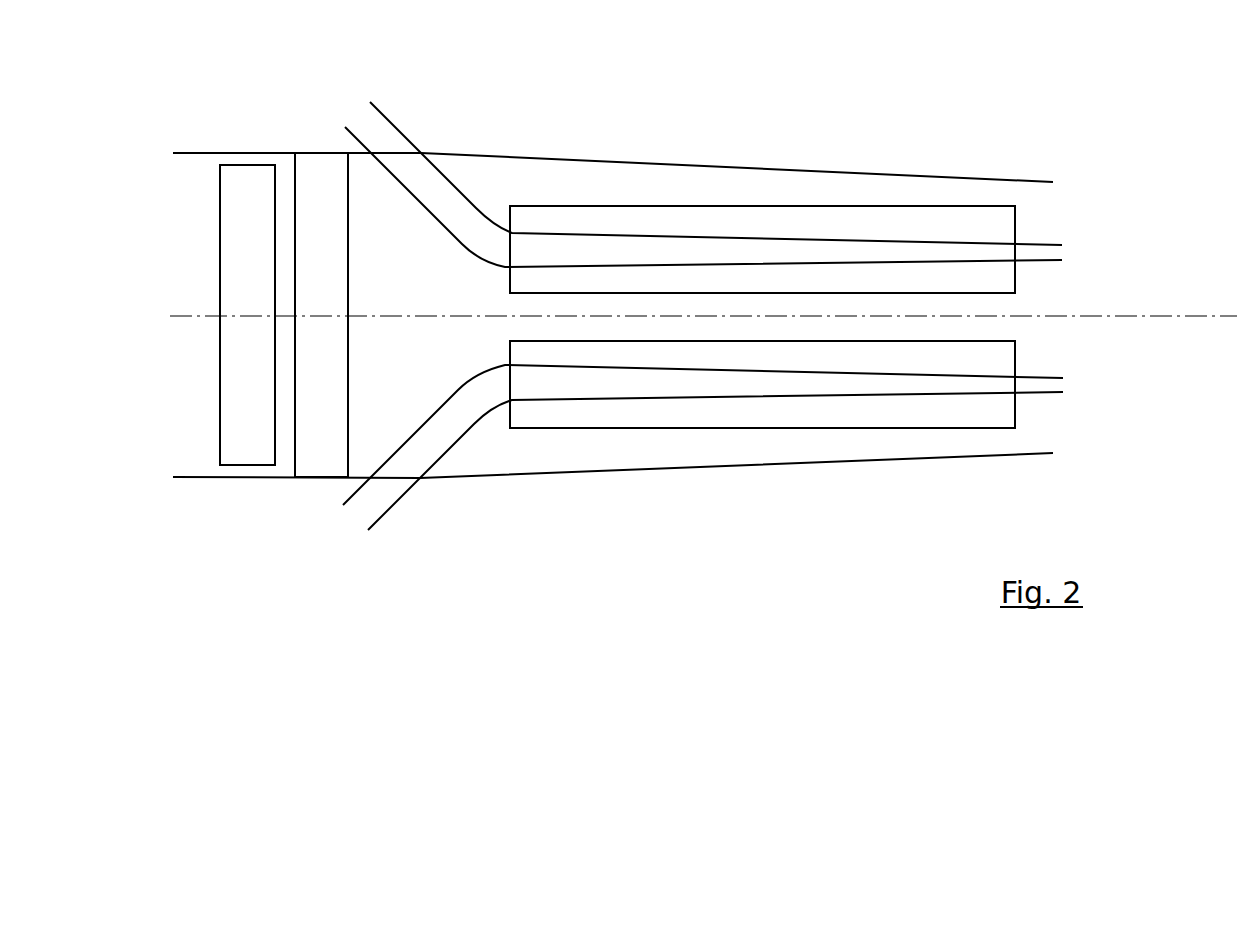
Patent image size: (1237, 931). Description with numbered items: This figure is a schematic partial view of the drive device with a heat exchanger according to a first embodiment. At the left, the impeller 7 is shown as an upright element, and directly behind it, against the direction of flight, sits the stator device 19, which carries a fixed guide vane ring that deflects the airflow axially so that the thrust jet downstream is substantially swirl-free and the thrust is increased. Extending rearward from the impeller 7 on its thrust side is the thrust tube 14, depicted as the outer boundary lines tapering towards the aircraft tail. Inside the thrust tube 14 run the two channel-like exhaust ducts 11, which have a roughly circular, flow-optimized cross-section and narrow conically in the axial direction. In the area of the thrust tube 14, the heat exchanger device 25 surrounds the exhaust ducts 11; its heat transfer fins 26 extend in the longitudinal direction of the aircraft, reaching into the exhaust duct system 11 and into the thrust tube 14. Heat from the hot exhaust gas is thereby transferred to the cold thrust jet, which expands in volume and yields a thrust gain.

The impeller 7 is at (231, 405).
The exhaust ducts 11 is at (440, 173).
The thrust tube 14 is at (585, 157).
The stator device 19 is at (337, 406).
The heat exchanger device 25 is at (850, 215).
The heat transfer fins 26 is at (1017, 217).